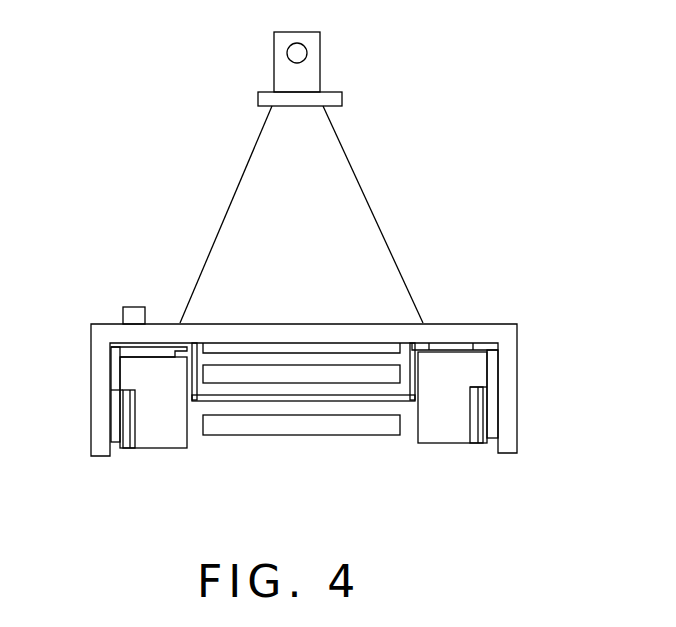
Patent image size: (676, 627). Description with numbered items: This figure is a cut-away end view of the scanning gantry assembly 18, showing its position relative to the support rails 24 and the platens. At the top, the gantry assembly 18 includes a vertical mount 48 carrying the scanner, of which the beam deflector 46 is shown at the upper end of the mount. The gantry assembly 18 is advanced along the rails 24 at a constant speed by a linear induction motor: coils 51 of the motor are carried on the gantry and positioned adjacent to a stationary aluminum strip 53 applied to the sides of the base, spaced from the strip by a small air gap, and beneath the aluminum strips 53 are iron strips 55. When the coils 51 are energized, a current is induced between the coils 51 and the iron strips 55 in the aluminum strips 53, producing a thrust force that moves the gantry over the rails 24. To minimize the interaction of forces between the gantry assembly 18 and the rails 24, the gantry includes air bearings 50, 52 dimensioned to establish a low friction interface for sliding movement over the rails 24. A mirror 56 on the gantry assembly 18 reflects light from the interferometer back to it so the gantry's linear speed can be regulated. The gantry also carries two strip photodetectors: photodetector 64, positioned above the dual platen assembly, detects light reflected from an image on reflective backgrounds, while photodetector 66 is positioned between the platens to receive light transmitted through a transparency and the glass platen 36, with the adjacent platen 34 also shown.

The gantry assembly 18 is at (518, 341).
The rails 24 is at (177, 450).
The upper rail 34 is at (308, 370).
The glass platen 36 is at (272, 434).
The beam deflector 46 is at (307, 53).
The vertical mount 48 is at (337, 163).
The air bearing 50 is at (135, 350).
The coils 51 is at (118, 407).
The air bearing 52 is at (118, 368).
The aluminum strip 53 is at (127, 430).
The iron strips 55 is at (132, 422).
The mirror 56 is at (140, 292).
The photodetector 64 is at (244, 354).
The photodetector 66 is at (305, 401).